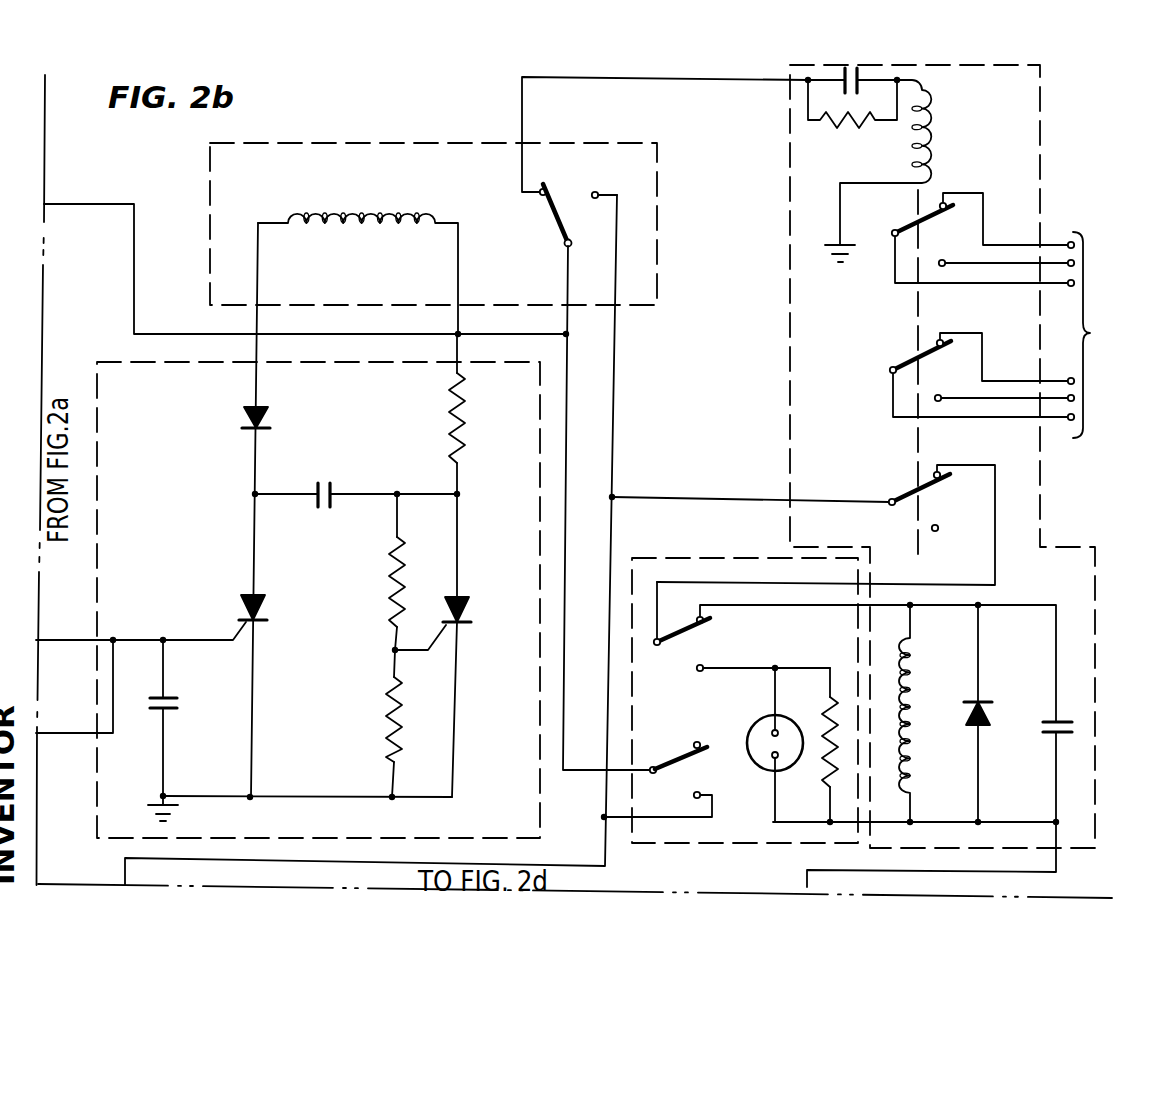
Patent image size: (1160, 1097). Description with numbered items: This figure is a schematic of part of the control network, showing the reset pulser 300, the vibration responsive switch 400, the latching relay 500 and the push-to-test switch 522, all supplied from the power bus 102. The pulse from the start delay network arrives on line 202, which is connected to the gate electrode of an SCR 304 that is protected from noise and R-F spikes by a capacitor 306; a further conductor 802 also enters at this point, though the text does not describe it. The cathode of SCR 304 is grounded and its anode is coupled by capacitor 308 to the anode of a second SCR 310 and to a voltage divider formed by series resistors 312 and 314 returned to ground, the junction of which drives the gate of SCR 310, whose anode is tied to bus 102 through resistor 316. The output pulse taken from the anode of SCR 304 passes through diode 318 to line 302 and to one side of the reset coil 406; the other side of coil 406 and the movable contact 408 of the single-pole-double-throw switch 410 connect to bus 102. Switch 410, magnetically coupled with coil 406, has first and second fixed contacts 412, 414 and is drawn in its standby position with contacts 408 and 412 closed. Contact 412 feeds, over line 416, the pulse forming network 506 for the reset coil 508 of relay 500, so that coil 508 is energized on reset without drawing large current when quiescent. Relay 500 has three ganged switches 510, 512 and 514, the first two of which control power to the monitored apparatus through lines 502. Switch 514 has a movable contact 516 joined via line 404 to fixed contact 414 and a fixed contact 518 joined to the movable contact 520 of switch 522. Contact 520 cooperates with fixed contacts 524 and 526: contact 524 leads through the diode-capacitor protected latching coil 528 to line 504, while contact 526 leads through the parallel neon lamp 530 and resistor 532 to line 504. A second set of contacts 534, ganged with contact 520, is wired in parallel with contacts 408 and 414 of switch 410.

The power bus 102 is at (94, 200).
The line 202 is at (60, 731).
The conductor 802 is at (60, 639).
The reset pulser 300 is at (335, 838).
The conductor 302 is at (255, 345).
The SCR 304 is at (250, 596).
The capacitor 306 is at (173, 711).
The capacitor 308 is at (332, 487).
The second SCR 310 is at (460, 598).
The resistor 312 is at (389, 572).
The resistor 314 is at (385, 720).
The resistor 316 is at (448, 408).
The diode 318 is at (243, 416).
The vibration responsive switch 400 is at (350, 143).
The line 404 is at (613, 463).
The reset coil 406 is at (356, 218).
The movable contact 408 is at (558, 226).
The single-pole-double-throw switch 410 is at (563, 197).
The first fixed contact 412 is at (540, 192).
The second fixed contact 414 is at (598, 195).
The line 416 is at (522, 127).
The latching relay 500 is at (1040, 495).
The lines 502 is at (1087, 247).
The line 504 is at (807, 885).
The pulse forming network 506 is at (836, 129).
The reset coil 508 is at (933, 110).
The single-pole-double-throw switch 510 is at (912, 248).
The single-pole-double-throw switch 512 is at (912, 381).
The single-pole-double-throw switch 514 is at (905, 513).
The movable contact 516 is at (925, 486).
The fixed contact 518 is at (935, 470).
The movable contact 520 is at (676, 637).
The push-to-test switch 522 is at (652, 556).
The fixed contact 524 is at (690, 614).
The fixed contact 526 is at (703, 666).
The latching coil 528 is at (905, 735).
The neon lamp 530 is at (765, 720).
The resistor 532 is at (833, 715).
The second set of contacts 534 is at (688, 768).